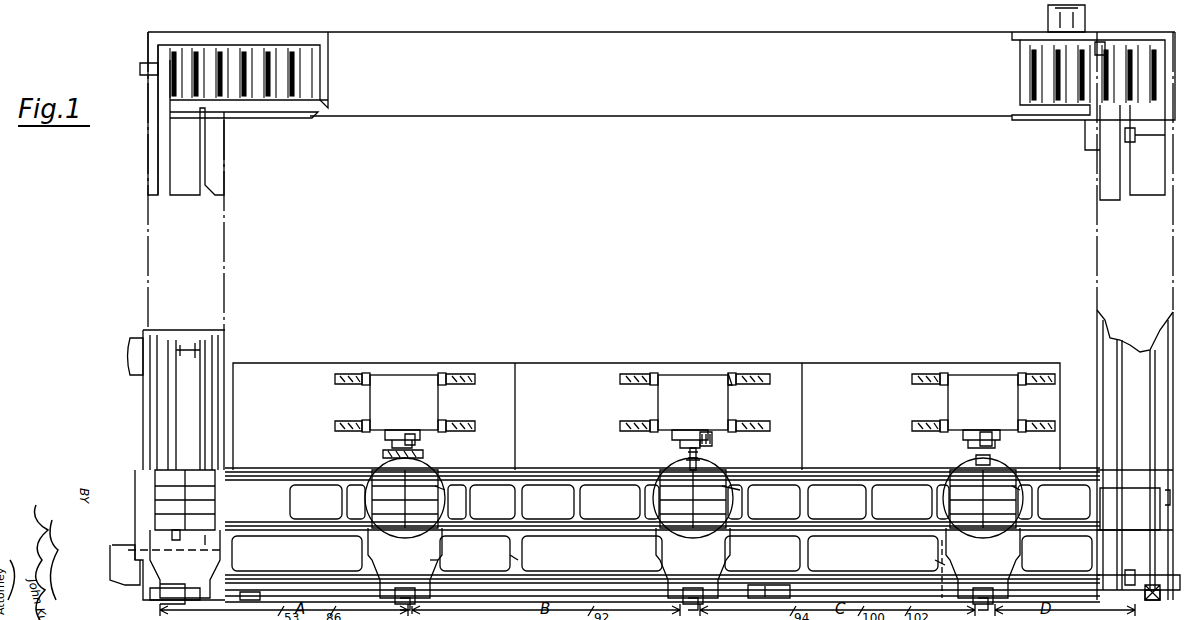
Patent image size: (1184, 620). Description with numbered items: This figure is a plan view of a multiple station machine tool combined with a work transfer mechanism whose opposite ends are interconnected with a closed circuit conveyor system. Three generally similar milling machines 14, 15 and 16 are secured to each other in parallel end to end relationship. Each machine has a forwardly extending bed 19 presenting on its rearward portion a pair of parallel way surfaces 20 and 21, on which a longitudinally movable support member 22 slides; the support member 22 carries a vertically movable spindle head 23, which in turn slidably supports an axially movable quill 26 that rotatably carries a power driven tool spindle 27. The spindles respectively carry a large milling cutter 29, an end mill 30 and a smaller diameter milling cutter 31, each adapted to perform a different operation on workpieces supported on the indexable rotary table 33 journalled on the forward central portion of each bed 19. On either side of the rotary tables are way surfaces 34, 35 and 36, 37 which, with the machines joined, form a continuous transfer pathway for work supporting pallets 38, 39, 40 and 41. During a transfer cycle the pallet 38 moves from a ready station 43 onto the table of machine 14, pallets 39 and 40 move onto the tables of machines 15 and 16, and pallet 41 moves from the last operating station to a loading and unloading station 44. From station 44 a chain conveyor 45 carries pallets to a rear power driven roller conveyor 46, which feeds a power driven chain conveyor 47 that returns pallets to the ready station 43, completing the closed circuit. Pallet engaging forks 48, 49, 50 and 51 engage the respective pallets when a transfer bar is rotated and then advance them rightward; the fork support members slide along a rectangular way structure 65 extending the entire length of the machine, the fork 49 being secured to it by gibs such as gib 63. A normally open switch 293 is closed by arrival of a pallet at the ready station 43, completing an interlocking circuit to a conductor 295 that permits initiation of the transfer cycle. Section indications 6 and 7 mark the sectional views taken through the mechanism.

The section line 6 is at (937, 549).
The section line 7 is at (125, 535).
The milling machine 14 is at (470, 353).
The milling machine 15 is at (585, 353).
The milling machine 16 is at (870, 353).
The bed 19 is at (662, 559).
The way surface 20 is at (348, 374).
The way surface 21 is at (340, 422).
The support member 22 is at (730, 372).
The spindle head 23 is at (390, 380).
The quill 26 is at (716, 436).
The tool spindle 27 is at (680, 446).
The milling cutter 29 is at (382, 454).
The end mill 30 is at (697, 457).
The milling cutter 31 is at (990, 459).
The rotary table 33 is at (445, 492).
The way surface 34 is at (296, 522).
The way surface 35 is at (265, 478).
The way surface 36 is at (470, 530).
The way surface 37 is at (476, 478).
The work supporting pallet 38 is at (200, 492).
The work supporting pallet 39 is at (420, 470).
The work supporting pallet 40 is at (666, 496).
The work supporting pallet 41 is at (958, 496).
The ready station 43 is at (232, 552).
The loading and unloading station 44 is at (1135, 575).
The chain conveyor 45 is at (1088, 268).
The roller conveyor 46 is at (1050, 120).
The chain conveyor 47 is at (230, 157).
The pallet engaging fork 48 is at (215, 530).
The pallet engaging fork 49 is at (428, 538).
The pallet engaging fork 50 is at (712, 538).
The pallet engaging fork 51 is at (983, 569).
The gib 63 is at (482, 562).
The way structure 65 is at (820, 562).
The switch 293 is at (172, 535).
The conductor 295 is at (1164, 496).